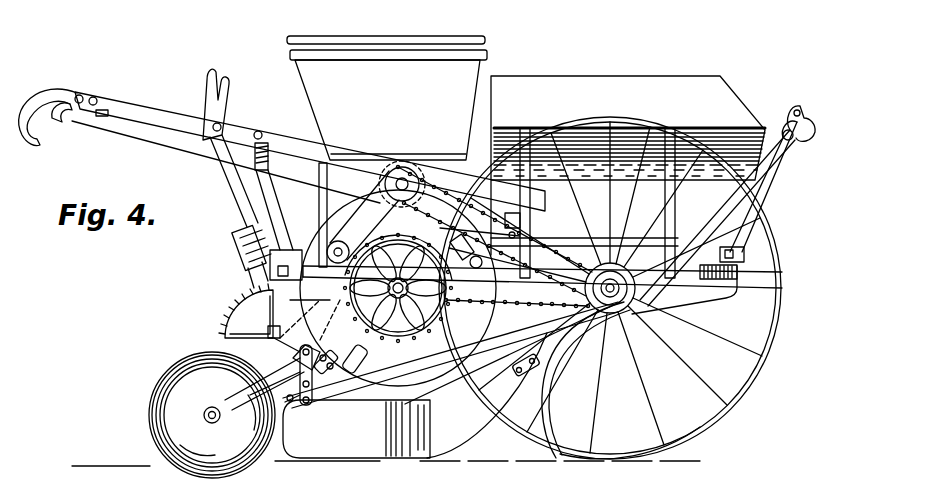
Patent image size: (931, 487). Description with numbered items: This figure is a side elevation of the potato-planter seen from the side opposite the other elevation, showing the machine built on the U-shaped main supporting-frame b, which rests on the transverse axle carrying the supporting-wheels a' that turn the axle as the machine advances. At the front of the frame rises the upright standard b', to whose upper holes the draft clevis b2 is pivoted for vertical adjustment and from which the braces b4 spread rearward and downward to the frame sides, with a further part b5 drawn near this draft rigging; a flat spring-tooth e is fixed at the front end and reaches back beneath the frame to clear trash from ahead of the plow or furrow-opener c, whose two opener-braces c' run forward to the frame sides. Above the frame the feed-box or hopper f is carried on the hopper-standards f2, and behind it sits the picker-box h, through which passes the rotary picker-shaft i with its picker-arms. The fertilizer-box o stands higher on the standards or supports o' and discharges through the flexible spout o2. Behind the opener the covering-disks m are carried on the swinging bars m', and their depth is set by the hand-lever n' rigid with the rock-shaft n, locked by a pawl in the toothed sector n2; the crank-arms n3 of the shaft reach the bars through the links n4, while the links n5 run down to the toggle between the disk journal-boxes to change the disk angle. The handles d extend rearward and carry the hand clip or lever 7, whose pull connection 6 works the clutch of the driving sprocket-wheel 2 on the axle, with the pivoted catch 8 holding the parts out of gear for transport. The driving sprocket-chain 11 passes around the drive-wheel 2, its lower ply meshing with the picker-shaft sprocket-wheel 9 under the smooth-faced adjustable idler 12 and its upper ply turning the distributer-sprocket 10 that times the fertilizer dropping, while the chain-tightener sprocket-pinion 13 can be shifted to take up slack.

The fertilizer-box o is at (387, 98).
The feed-box or hopper f is at (600, 84).
The spring-tooth e is at (628, 330).
The supporting-wheels a' is at (631, 426).
The driving sprocket-wheel 2 is at (642, 300).
The handles d is at (148, 117).
The hand clip or lever 7 is at (58, 112).
The pivoted catch 8 is at (91, 112).
The pull connection 6 is at (184, 157).
The hand-lever n' is at (235, 178).
The standards or supports o' is at (291, 205).
The picker-box h is at (542, 314).
The plow or furrow-opener c is at (451, 324).
The bars of vertically-swinging frame m' is at (356, 429).
The picker-shaft sprocket-wheel 9 is at (467, 298).
The sprocket-pinion of chain-tightener 13 is at (363, 217).
The distributer-sprocket 10 is at (410, 182).
The hopper-standards f2 is at (535, 212).
The adjustable idler 12 is at (466, 277).
The driving sprocket-chain 11 is at (546, 360).
The opener-braces c' is at (639, 362).
The clevis b2 is at (770, 186).
The braces b4 is at (730, 212).
The upright standard b' is at (791, 115).
The bracket b5 is at (745, 254).
The main supporting-frame b is at (730, 273).
The toothed sector n2 is at (240, 313).
The rock-shaft n is at (277, 345).
The crank-arms n3 is at (356, 272).
The rotary picker-shaft i is at (365, 312).
The discharge spout, nozzle, or tube o2 is at (348, 359).
The links n5 is at (262, 386).
The links n4 is at (295, 410).
The covering-disks m is at (193, 415).